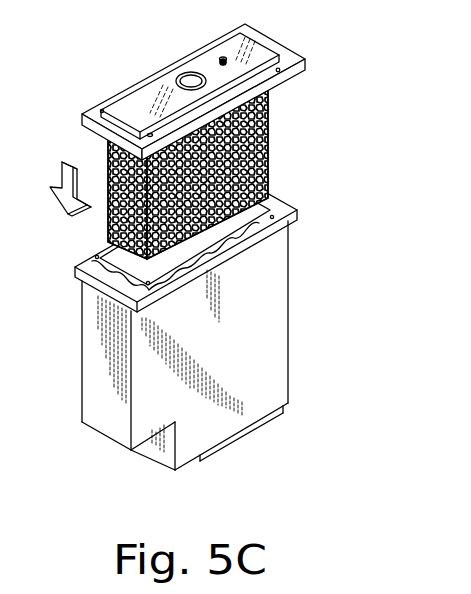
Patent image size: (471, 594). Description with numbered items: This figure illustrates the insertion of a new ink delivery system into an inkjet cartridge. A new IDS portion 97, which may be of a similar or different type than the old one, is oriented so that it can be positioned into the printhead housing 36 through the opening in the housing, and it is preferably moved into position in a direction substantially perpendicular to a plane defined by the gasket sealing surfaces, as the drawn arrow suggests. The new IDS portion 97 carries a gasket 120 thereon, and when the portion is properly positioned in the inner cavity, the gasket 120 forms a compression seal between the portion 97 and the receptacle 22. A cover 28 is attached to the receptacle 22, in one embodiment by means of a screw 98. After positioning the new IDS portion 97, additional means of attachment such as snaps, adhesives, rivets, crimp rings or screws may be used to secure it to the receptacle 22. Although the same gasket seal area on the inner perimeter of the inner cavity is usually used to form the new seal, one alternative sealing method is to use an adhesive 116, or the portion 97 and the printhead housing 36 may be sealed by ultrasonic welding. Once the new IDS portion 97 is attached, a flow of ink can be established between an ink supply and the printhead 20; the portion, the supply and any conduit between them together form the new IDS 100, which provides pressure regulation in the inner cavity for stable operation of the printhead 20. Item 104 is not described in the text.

The new ink delivery system 100 is at (221, 242).
The cover 28 is at (225, 87).
The vent plug 104 is at (226, 58).
The screw 98 is at (298, 56).
The gasket 120 is at (268, 100).
The new IDS portion 97 is at (300, 112).
The adhesive 116 is at (270, 192).
The printhead housing 36 is at (233, 301).
The receptacle 22 is at (273, 333).
The printhead 20 is at (257, 430).